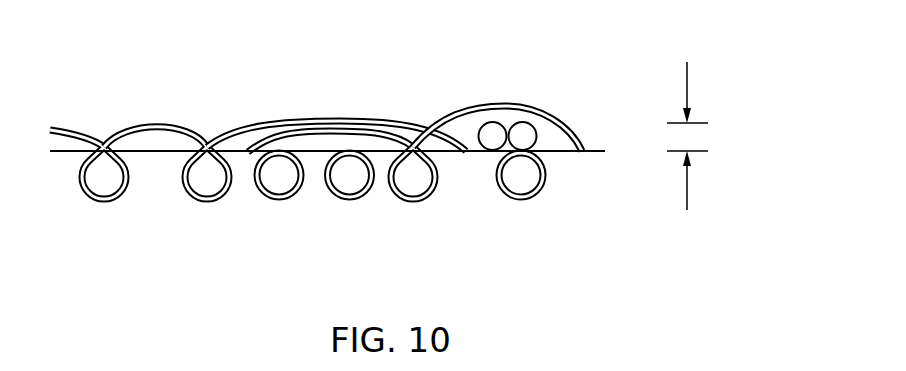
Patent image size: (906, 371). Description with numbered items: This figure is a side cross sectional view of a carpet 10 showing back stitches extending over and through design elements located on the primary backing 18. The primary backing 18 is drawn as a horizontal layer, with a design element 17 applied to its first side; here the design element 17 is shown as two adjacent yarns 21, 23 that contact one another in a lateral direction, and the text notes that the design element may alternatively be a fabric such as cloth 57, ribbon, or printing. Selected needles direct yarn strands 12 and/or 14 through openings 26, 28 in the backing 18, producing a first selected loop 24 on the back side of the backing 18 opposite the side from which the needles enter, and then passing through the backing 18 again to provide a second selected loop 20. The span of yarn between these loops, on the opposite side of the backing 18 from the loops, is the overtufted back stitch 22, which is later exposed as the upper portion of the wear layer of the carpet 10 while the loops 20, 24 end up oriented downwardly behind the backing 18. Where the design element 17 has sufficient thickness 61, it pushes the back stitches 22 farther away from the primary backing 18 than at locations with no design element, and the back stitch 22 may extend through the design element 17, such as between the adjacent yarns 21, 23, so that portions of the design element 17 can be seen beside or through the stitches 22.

The carpet 10 is at (330, 148).
The yarn strand 12 is at (157, 133).
The yarn strand 14 is at (279, 200).
The design element 17 is at (378, 153).
The primary backing 18 is at (563, 155).
The second selected loop 20 is at (349, 200).
The yarn 21 is at (494, 130).
The back stitch 22 is at (354, 130).
The yarn 23 is at (523, 130).
The first selected loop 24 is at (418, 200).
The opening 26 is at (554, 153).
The opening 28 is at (254, 178).
The cloth 57 is at (291, 130).
The thickness 61 is at (700, 117).